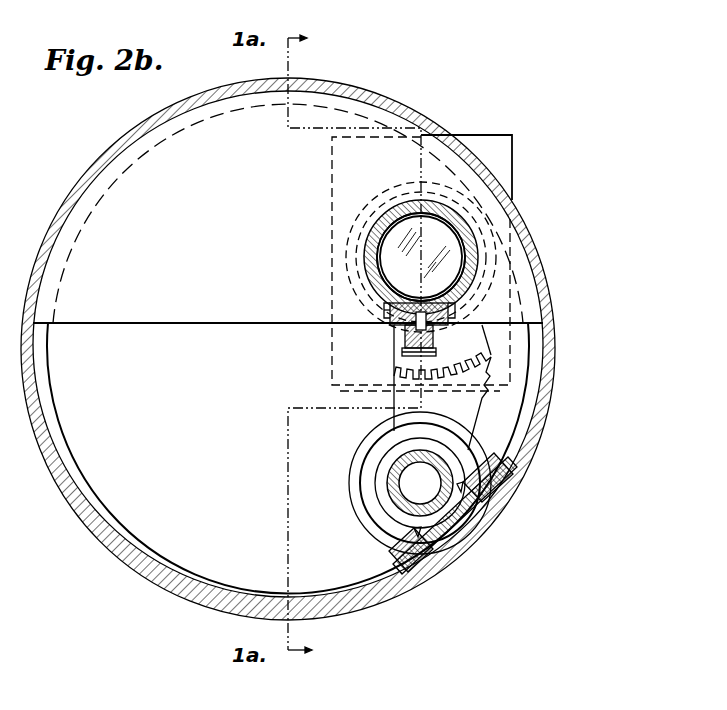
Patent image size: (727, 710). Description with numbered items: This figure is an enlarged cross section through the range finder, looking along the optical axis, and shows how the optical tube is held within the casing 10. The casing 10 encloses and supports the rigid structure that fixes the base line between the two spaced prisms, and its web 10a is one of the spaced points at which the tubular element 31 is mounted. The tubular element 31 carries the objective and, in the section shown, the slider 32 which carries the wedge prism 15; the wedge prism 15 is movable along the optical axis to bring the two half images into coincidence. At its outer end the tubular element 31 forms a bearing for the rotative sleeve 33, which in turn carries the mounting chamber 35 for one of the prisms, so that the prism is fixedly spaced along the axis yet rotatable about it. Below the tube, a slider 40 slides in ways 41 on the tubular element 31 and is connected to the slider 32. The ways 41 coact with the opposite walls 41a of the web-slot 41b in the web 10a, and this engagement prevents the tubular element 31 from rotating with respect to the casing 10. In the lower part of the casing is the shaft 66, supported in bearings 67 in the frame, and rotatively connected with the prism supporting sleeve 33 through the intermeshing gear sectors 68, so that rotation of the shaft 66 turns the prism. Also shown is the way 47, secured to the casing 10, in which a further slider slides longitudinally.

The casing 10 is at (86, 178).
The web 10a is at (238, 305).
The wedge prism 15 is at (421, 257).
The tubular element 31 is at (366, 262).
The slider 32 is at (378, 278).
The rotative sleeve 33 is at (358, 249).
The mounting chamber 35 is at (512, 157).
The slider 40 is at (404, 351).
The ways 41 is at (442, 328).
The wall of web-slot 41a is at (396, 326).
The web-slot 41b is at (386, 308).
The way 47 is at (500, 512).
The shaft 66 is at (392, 487).
The bearing 67 is at (373, 509).
The gear sector 68 is at (442, 387).